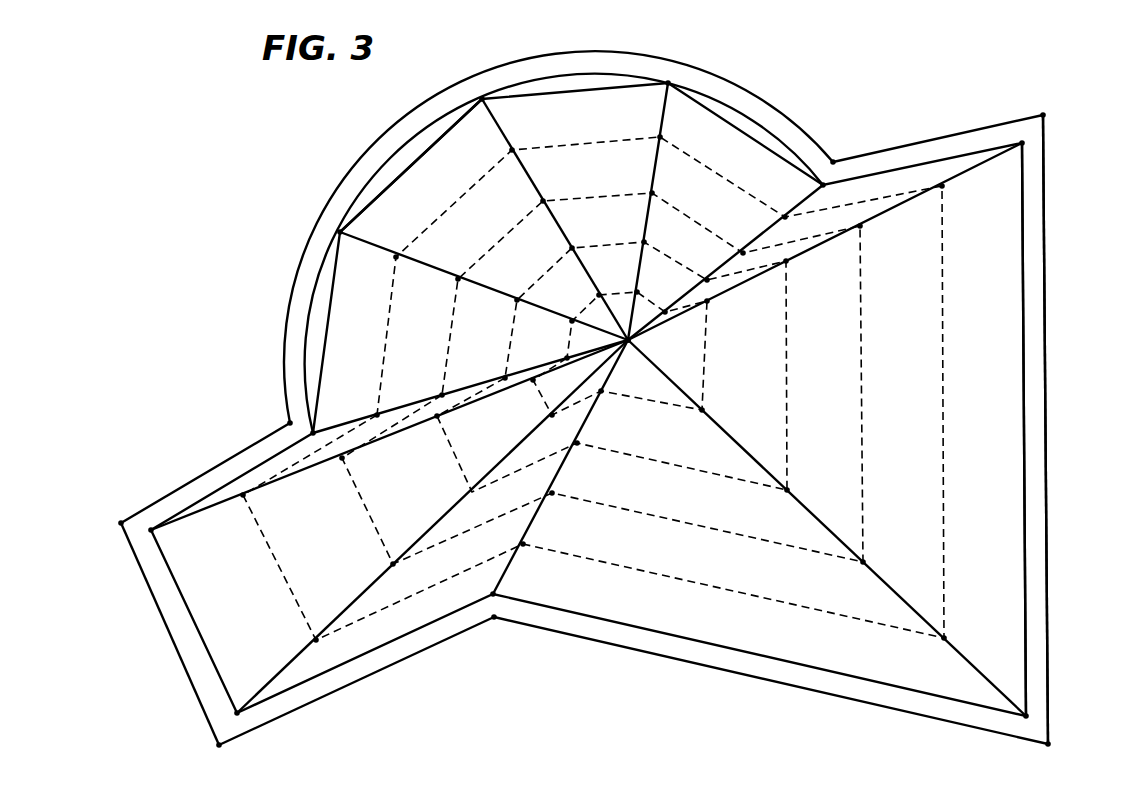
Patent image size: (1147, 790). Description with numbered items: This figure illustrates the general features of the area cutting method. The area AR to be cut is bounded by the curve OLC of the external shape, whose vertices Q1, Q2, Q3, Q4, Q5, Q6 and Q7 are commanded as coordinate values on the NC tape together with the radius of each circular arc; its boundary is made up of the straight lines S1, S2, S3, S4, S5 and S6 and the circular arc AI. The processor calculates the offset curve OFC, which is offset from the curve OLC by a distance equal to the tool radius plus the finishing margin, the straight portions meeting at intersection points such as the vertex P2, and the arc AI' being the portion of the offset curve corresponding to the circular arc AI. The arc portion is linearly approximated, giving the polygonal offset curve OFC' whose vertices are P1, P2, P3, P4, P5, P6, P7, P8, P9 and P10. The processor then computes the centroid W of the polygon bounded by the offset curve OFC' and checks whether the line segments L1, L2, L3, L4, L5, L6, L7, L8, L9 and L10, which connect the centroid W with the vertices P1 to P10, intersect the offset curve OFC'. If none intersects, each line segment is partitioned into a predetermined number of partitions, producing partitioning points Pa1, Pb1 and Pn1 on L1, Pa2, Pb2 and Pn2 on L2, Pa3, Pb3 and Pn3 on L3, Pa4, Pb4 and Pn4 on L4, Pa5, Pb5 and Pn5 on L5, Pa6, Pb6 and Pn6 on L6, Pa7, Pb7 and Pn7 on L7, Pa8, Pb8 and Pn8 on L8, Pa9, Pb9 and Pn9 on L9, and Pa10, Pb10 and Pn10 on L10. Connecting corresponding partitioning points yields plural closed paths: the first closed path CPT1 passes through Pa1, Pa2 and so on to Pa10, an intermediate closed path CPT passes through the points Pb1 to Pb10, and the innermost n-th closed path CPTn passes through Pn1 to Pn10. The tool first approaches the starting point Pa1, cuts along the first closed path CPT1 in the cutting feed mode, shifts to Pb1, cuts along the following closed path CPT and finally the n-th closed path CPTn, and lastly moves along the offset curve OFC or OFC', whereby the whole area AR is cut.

The centroid W is at (646, 346).
The vertex P1 is at (327, 420).
The vertex P2 is at (167, 538).
The vertex P3 is at (230, 723).
The vertex P4 is at (498, 605).
The vertex P5 is at (1031, 727).
The vertex P6 is at (1029, 134).
The vertex P7 is at (835, 194).
The vertex P8 is at (680, 102).
The vertex P9 is at (501, 108).
The vertex P10 is at (363, 231).
The vertex of the area Q1 is at (277, 416).
The vertex of the area Q2 is at (106, 532).
The vertex of the area Q3 is at (204, 740).
The vertex of the area Q4 is at (499, 629).
The vertex of the area Q5 is at (1063, 745).
The vertex of the area Q6 is at (1059, 111).
The vertex of the area Q7 is at (844, 151).
The straight line S1 is at (215, 466).
The straight line S2 is at (180, 653).
The outer boundary side S3 is at (367, 690).
The outer boundary side S4 is at (707, 668).
The outer boundary side S5 is at (1049, 467).
The outer boundary side S6 is at (930, 138).
The line segment L1 is at (467, 387).
The line segment L2 is at (392, 437).
The line segment L3 is at (427, 531).
The line segment L4 is at (553, 488).
The line segment L5 is at (807, 511).
The line segment L6 is at (880, 215).
The line segment L7 is at (760, 233).
The line segment L8 is at (655, 163).
The line segment L9 is at (532, 180).
The line segment L10 is at (430, 265).
The partitioning point Pa1 is at (393, 402).
The partitioning point Pa2 is at (234, 509).
The partitioning point Pa3 is at (297, 640).
The partitioning point Pa4 is at (541, 536).
The partitioning point Pa5 is at (961, 636).
The partitioning point Pa6 is at (960, 195).
The partitioning point Pa7 is at (781, 203).
The partitioning point Pa8 is at (674, 159).
The partitioning point Pa9 is at (512, 152).
The partitioning point Pa10 is at (378, 266).
The partitioning point Pb1 is at (431, 386).
The partitioning point Pb2 is at (334, 473).
The partitioning point Pb3 is at (373, 563).
The partitioning point Pb4 is at (561, 506).
The partitioning point Pb5 is at (881, 560).
The partitioning point Pb6 is at (845, 245).
The partitioning point Pb7 is at (724, 253).
The partitioning point Pb8 is at (631, 206).
The partitioning point Pb9 is at (564, 210).
The partitioning point Pb10 is at (439, 286).
The partitioning point Pn1 is at (552, 353).
The partitioning point Pn2 is at (522, 396).
The partitioning point Pn3 is at (562, 427).
The partitioning point Pn4 is at (616, 404).
The partitioning point Pn5 is at (720, 406).
The partitioning point Pn6 is at (720, 311).
The partitioning point Pn7 is at (666, 298).
The partitioning point Pn8 is at (657, 258).
The partitioning point Pn9 is at (611, 283).
The partitioning point Pn10 is at (572, 308).
The first closed path CPT1 is at (717, 588).
The closed path CPT is at (717, 530).
The n-th closed path CPTn is at (683, 410).
The circular arc AI is at (558, 228).
The inner arc of arcuate region AI' is at (564, 249).
The offset curve OFC is at (1073, 429).
The linearly approximated offset curve OFC' is at (408, 157).
The curve of the external shape OLC is at (1052, 350).
The area AR is at (1005, 317).